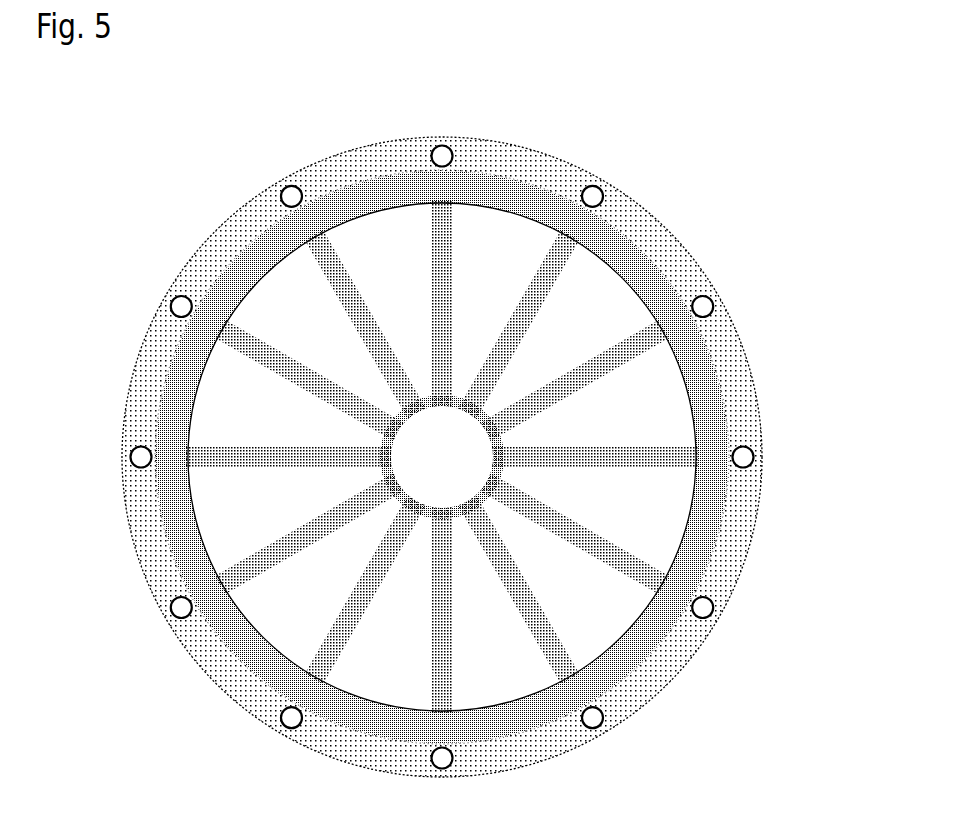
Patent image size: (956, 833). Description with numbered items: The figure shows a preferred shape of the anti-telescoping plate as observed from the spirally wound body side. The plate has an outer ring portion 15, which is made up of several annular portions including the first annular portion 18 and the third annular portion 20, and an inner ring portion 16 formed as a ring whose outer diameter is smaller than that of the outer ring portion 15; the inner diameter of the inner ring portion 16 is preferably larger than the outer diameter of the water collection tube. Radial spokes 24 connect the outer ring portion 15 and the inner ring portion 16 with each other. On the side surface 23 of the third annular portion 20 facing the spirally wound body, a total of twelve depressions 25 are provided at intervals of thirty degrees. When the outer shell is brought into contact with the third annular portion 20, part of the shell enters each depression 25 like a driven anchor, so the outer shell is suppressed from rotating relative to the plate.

The outer ring portion 15 is at (720, 542).
The inner ring portion 16 is at (390, 438).
The first annular portion 18 is at (713, 365).
The third annular portion 20 is at (530, 152).
The side surface 23 is at (690, 277).
The spokes 24 is at (327, 268).
The depression 25 is at (293, 190).